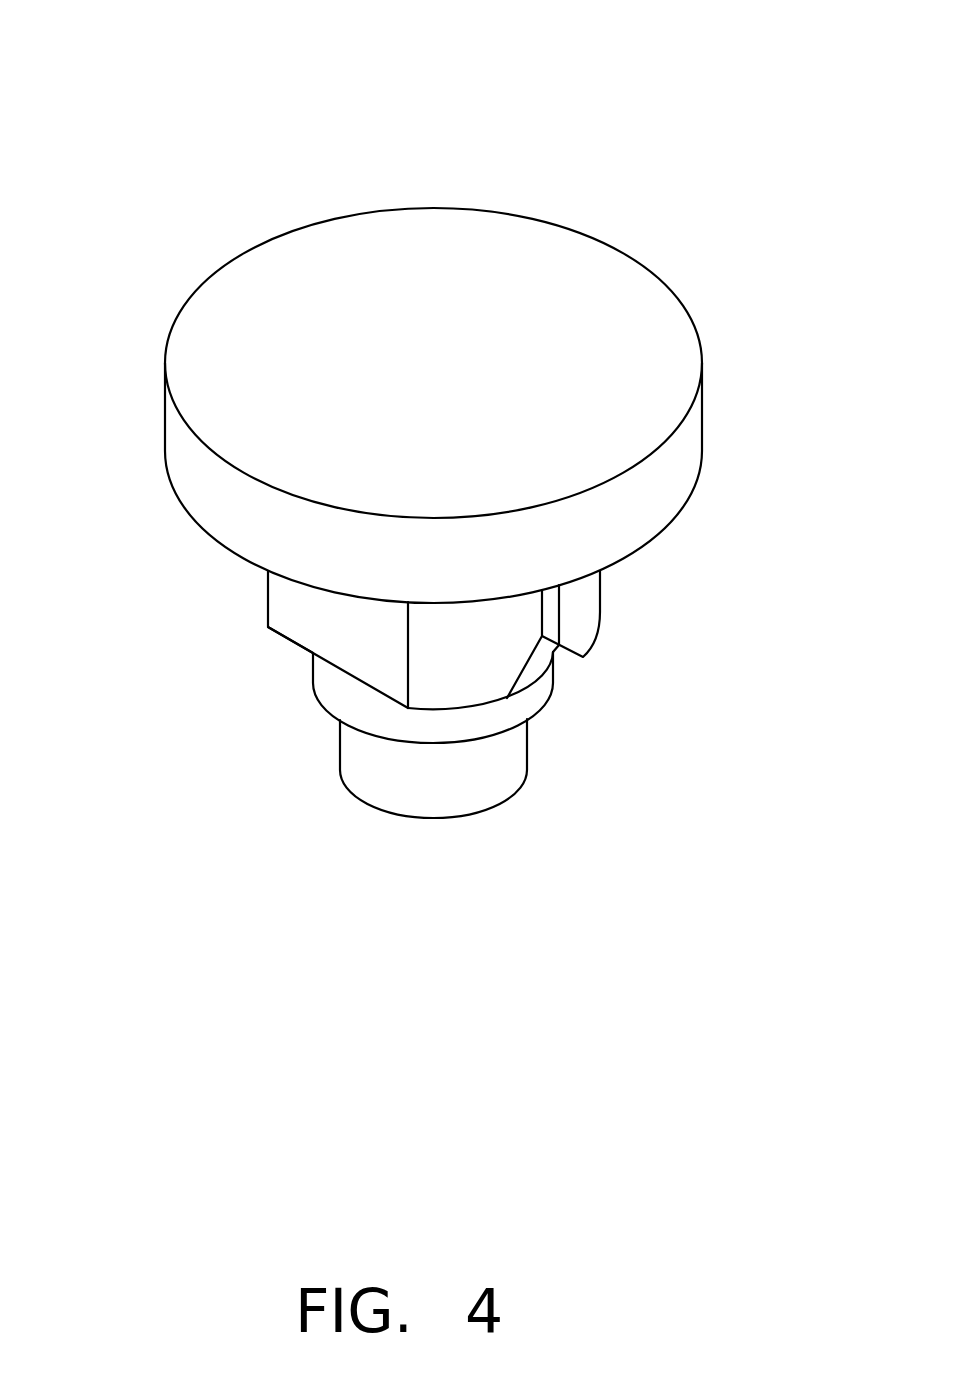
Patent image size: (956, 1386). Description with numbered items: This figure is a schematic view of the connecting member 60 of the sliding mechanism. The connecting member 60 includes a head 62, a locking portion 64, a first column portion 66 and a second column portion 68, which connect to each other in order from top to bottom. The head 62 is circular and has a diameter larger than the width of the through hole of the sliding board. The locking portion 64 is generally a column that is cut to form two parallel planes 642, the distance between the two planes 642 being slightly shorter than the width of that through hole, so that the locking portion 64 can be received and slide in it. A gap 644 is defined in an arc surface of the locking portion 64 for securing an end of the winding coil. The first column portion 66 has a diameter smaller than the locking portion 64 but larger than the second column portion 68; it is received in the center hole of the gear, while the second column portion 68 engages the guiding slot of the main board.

The connecting member 60 is at (420, 31).
The head 62 is at (422, 282).
The locking portion 64 is at (441, 603).
The planes 642 is at (325, 618).
The gap 644 is at (547, 618).
The first column portion 66 is at (342, 697).
The second column portion 68 is at (390, 770).